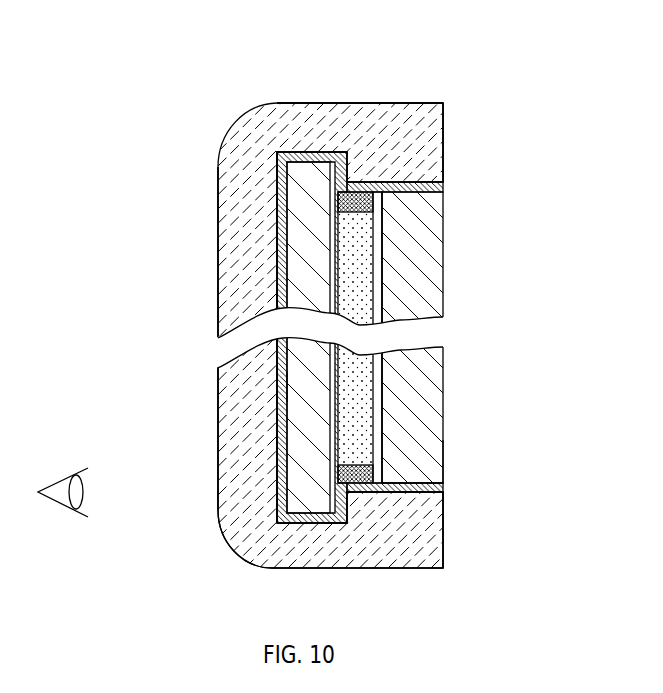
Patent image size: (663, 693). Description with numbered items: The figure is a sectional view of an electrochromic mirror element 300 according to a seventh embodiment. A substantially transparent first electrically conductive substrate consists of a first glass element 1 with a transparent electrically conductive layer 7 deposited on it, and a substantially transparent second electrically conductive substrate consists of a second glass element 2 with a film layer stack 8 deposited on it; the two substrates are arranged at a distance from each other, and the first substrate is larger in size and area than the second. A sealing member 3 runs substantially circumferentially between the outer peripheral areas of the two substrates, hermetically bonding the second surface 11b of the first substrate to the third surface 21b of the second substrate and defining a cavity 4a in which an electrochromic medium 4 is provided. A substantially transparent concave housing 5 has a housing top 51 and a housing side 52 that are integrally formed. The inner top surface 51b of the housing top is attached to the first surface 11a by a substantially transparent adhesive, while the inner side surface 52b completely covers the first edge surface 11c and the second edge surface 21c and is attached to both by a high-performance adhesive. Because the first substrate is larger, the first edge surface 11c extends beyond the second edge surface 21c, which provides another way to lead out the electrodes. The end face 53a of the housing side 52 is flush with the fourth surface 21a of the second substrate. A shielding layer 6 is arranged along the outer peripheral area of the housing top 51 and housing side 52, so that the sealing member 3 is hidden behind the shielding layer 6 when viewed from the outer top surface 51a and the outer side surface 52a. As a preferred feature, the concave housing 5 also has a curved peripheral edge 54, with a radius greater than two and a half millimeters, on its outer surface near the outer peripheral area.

The electrochromic mirror element 300 is at (143, 57).
The first glass element 1 is at (290, 440).
The first surface 11a is at (283, 423).
The second surface 11b is at (283, 503).
The first edge surface 11c is at (285, 152).
The second glass element 2 is at (383, 447).
The fourth surface 21a is at (410, 471).
The third surface 21b is at (383, 383).
The second edge surface 21c is at (432, 185).
The sealing member 3 is at (410, 502).
The electrochromic medium 4 is at (443, 485).
The cavity 4a is at (380, 300).
The concave housing 5 is at (98, 203).
The housing top 51 is at (250, 284).
The outer top surface 51a is at (222, 328).
The inner top surface 51b is at (243, 228).
The housing side 52 is at (363, 128).
The outer side surface 52a is at (420, 103).
The inner side surface 52b is at (335, 152).
The end face 53a is at (443, 122).
The curved peripheral edge 54 is at (243, 550).
The shielding layer 6 is at (272, 160).
The transparent electrically conductive layer 7 is at (280, 388).
The film layer stack 8 is at (352, 298).